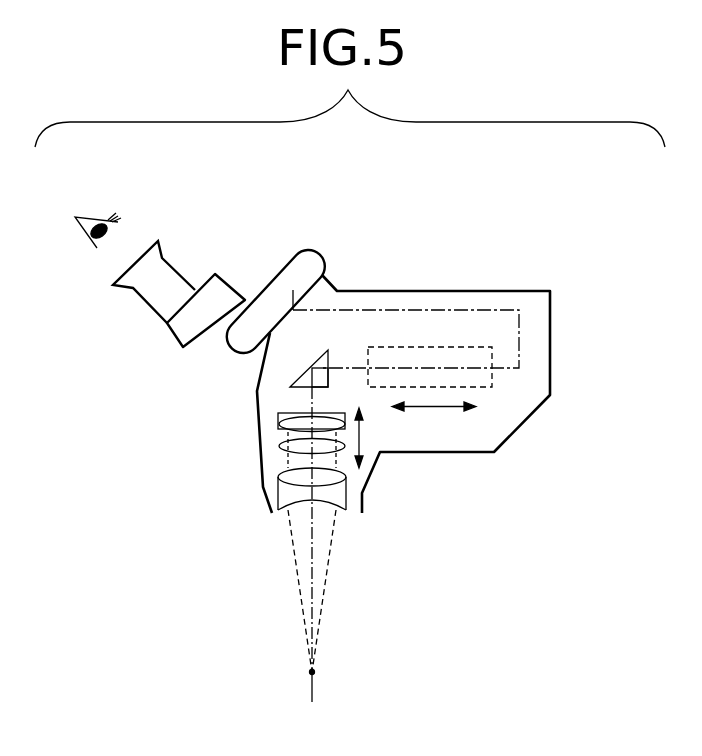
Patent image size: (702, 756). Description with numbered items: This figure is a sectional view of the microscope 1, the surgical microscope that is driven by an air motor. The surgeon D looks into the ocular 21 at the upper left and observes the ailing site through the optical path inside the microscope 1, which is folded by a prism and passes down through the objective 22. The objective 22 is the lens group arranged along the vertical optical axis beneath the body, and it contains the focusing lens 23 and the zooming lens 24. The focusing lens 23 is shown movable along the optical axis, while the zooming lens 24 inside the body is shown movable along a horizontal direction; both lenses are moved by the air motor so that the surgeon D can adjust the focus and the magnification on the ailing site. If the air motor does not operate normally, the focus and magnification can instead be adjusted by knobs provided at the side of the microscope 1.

The surgeon D is at (99, 223).
The microscope 1 is at (437, 291).
The ocular 21 is at (153, 312).
The objective 22 is at (247, 403).
The focusing lens 23 is at (345, 452).
The zooming lens 24 is at (482, 387).